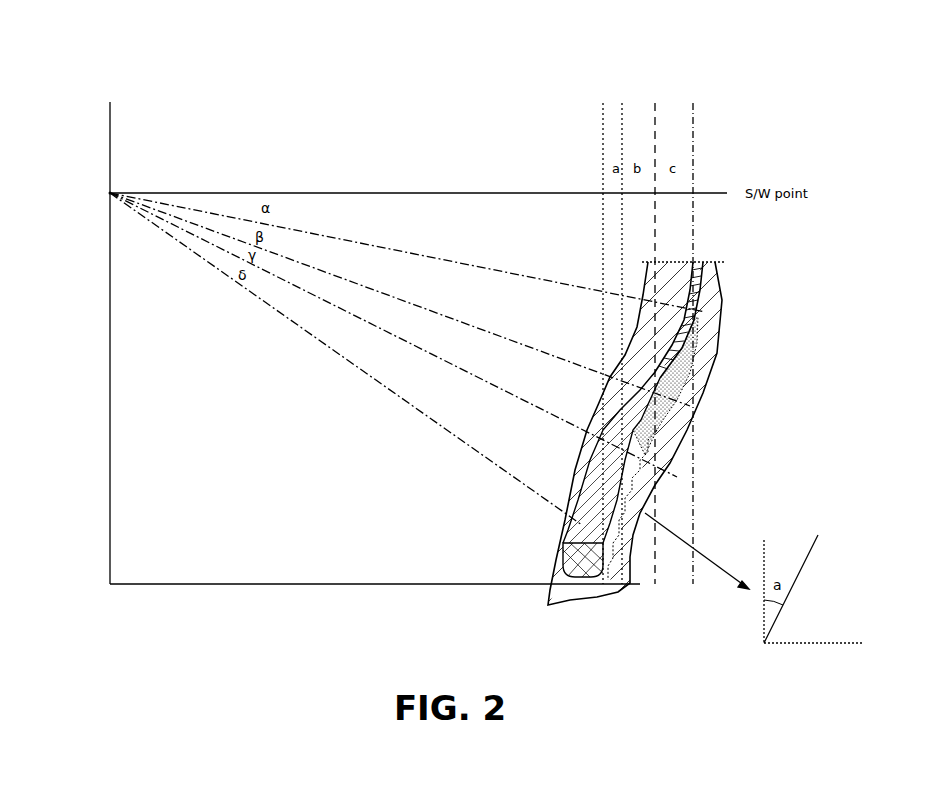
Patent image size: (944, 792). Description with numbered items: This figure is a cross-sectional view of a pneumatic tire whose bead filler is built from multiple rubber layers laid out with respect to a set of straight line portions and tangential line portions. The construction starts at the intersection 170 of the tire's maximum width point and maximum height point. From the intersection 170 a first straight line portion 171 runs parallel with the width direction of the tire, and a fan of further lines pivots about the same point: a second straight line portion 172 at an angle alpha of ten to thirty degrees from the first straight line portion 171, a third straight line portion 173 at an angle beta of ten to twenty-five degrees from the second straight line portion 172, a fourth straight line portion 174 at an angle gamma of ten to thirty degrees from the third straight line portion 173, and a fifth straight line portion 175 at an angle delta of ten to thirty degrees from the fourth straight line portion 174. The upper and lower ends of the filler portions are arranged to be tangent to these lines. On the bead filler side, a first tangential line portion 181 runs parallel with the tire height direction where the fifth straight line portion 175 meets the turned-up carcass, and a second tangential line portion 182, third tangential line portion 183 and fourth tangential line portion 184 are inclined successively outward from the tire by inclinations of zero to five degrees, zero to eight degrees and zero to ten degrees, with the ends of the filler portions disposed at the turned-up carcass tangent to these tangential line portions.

The intersection 170 is at (110, 193).
The first straight line portion 171 is at (150, 191).
The second straight line portion 172 is at (199, 211).
The third straight line portion 173 is at (244, 242).
The fourth straight line portion 174 is at (173, 225).
The fifth straight line portion 175 is at (208, 261).
The first tangential line portion 181 is at (603, 135).
The second tangential line portion 182 is at (622, 118).
The third tangential line portion 183 is at (655, 120).
The fourth tangential line portion 184 is at (693, 135).